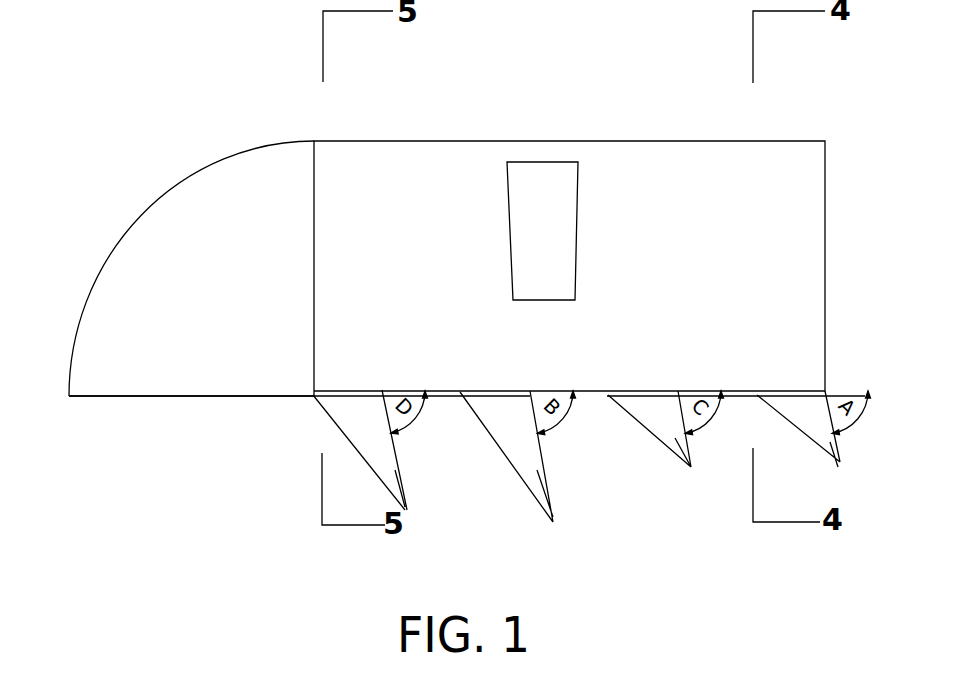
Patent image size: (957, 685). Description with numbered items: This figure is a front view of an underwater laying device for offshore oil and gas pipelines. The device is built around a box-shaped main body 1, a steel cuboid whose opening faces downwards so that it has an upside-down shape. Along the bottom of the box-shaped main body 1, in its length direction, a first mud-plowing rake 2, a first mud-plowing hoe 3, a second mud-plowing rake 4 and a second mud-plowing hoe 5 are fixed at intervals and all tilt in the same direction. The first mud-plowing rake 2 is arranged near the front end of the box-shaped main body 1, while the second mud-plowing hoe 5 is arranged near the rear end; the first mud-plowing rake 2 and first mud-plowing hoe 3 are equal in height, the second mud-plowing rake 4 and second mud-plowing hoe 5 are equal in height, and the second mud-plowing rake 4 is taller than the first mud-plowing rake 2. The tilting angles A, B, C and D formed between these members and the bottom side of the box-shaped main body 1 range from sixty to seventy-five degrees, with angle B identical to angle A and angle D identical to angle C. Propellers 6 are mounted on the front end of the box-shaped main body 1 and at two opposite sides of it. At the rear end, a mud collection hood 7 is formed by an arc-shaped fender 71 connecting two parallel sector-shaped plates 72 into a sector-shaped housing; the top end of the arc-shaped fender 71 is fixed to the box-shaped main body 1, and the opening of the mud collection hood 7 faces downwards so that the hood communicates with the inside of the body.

The box-shaped main body 1 is at (713, 178).
The first mud-plowing rake 2 is at (840, 462).
The first mud-plowing hoe 3 is at (691, 467).
The second mud-plowing rake 4 is at (553, 522).
The second mud-plowing hoe 5 is at (407, 510).
The propellers 6 is at (532, 195).
The mud collection hood 7 is at (178, 244).
The arc-shaped fender 71 is at (192, 178).
The sector-shaped plates 72 is at (183, 260).